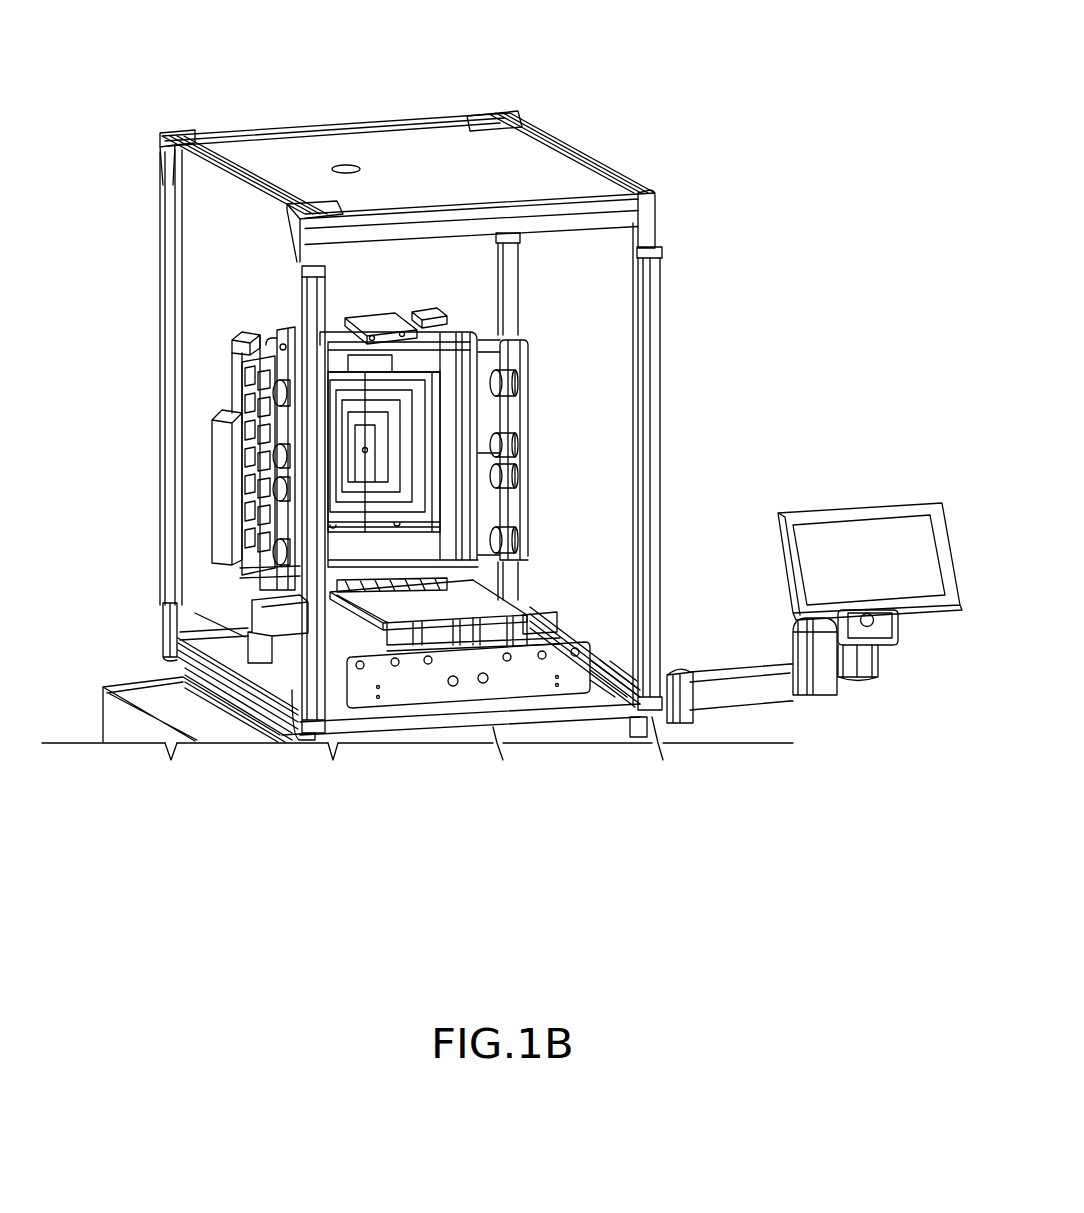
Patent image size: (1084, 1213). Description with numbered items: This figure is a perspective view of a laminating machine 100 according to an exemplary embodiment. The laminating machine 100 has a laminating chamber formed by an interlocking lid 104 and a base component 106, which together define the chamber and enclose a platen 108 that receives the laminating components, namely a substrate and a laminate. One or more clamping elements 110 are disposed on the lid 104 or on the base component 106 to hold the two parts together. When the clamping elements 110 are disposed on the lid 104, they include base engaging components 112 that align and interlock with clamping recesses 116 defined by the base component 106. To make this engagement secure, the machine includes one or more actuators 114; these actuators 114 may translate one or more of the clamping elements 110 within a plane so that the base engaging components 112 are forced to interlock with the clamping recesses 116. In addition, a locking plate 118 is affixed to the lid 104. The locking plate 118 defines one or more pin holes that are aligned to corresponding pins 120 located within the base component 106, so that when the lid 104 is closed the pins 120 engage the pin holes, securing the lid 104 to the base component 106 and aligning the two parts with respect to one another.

The laminating machine 100 is at (543, 70).
The interlocking lid 104 is at (435, 310).
The base component 106 is at (577, 680).
The platen 108 is at (473, 598).
The clamping elements 110 is at (523, 418).
The base engaging components 112 is at (278, 397).
The actuators 114 is at (220, 517).
The clamping recesses 116 is at (210, 632).
The locking plate 118 is at (378, 322).
The pins 120 is at (453, 687).